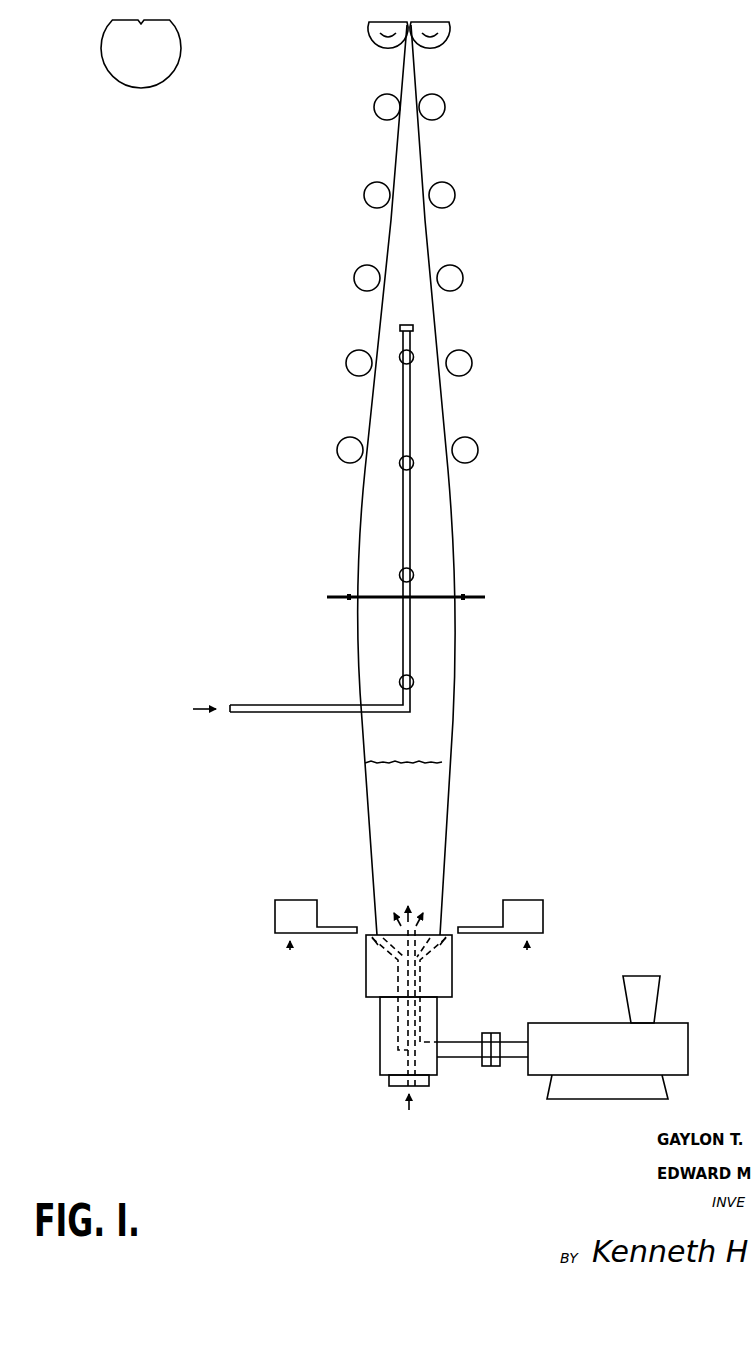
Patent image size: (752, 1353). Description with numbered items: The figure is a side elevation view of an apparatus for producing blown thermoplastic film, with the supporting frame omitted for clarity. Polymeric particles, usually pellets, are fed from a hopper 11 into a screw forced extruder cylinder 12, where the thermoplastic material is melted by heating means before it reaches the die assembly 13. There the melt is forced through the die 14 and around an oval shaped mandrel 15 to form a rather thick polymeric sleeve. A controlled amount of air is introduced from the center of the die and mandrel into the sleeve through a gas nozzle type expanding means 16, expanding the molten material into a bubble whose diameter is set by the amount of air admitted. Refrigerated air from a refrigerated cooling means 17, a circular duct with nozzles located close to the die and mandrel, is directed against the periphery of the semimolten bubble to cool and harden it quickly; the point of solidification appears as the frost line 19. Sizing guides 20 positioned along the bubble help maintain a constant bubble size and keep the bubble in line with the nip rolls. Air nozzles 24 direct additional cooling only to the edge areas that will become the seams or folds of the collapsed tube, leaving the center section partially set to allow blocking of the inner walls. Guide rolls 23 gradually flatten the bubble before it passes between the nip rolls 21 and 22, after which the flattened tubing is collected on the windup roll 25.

The hopper 11 is at (652, 976).
The screw forced extruder cylinder 12 is at (542, 1023).
The die assembly 13 is at (380, 1047).
The die 14 is at (416, 973).
The oval shaped mandrel 15 is at (388, 946).
The expanding means 16 is at (410, 935).
The refrigerated cooling means 17 is at (355, 928).
The frost line 19 is at (448, 763).
The sizing guides 20 is at (483, 597).
The nip roll 21 is at (446, 40).
The nip roll 22 is at (376, 44).
The guide rolls 23 is at (452, 184).
The air nozzles 24 is at (410, 509).
The windup roll 25 is at (118, 82).